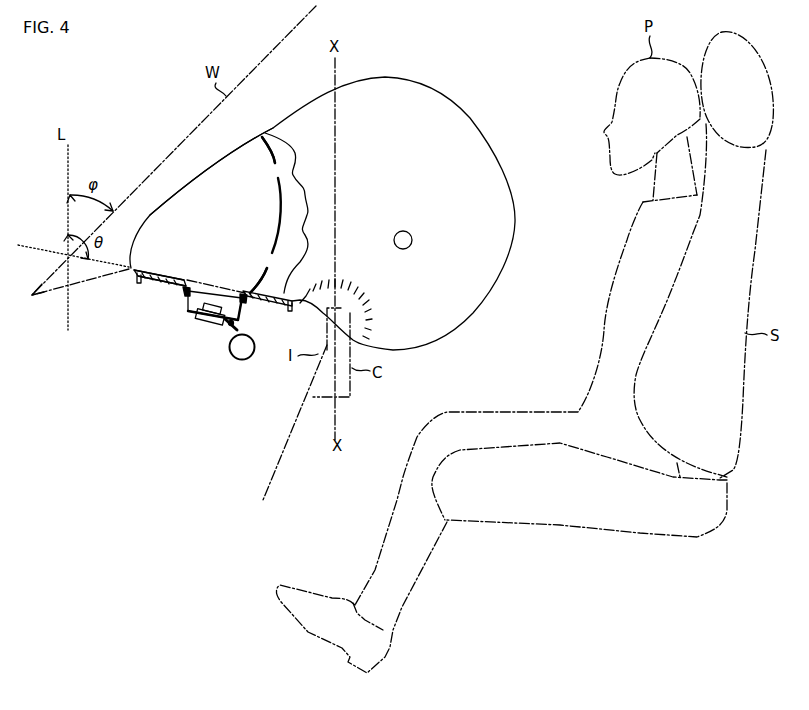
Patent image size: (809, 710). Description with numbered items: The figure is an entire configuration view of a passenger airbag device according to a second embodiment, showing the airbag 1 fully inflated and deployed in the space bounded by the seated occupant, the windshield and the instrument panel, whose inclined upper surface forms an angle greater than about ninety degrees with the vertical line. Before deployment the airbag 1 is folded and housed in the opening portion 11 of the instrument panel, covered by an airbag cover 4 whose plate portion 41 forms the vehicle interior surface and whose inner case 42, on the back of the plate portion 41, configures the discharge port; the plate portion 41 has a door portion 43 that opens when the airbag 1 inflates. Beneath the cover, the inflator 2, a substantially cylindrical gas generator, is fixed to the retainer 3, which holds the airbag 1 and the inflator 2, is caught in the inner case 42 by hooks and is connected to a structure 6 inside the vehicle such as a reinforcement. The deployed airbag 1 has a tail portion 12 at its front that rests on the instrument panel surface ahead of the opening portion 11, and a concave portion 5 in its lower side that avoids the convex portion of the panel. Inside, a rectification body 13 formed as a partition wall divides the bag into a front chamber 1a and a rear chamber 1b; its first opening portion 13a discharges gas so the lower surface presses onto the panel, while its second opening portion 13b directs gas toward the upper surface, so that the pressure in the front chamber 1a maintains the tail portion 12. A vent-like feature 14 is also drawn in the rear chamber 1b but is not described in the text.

The airbag 1 is at (419, 83).
The front chamber 1a is at (201, 214).
The rear chamber 1b is at (406, 161).
The inflator 2 is at (214, 330).
The retainer 3 is at (189, 318).
The airbag cover 4 is at (128, 296).
The concave portion 5 is at (360, 296).
The structure 6 is at (239, 361).
The opening portion 11 is at (224, 281).
The tail portion 12 is at (145, 215).
The rectification body 13 is at (280, 203).
The first opening portion 13a is at (262, 265).
The second opening portion 13b is at (276, 173).
The vent 14 is at (413, 238).
The plate portion 41 is at (158, 288).
The inner case 42 is at (185, 298).
The door portion 43 is at (161, 270).